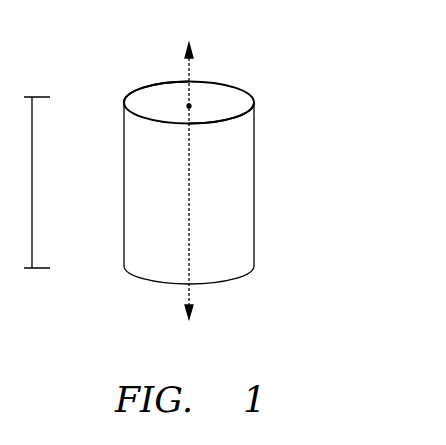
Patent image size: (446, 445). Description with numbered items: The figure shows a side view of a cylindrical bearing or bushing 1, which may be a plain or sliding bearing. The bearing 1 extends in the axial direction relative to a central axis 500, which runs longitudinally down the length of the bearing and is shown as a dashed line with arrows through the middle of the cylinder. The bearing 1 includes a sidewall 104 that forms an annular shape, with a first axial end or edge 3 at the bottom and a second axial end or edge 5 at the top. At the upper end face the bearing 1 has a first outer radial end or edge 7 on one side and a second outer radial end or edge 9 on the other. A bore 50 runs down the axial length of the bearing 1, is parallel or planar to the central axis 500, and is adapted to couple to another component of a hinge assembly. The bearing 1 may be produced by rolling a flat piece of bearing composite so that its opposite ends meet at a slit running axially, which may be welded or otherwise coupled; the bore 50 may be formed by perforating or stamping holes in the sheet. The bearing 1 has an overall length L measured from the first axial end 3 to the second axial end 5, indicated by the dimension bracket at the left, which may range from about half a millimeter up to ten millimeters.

The bearing 1 is at (340, 95).
The first axial end 3 is at (254, 267).
The second axial end 5 is at (254, 103).
The first outer radial end 7 is at (124, 99).
The second outer radial end 9 is at (255, 106).
The bore 50 is at (157, 96).
The central axis 500 is at (192, 104).
The sidewall 104 is at (239, 210).
The overall length L is at (32, 180).